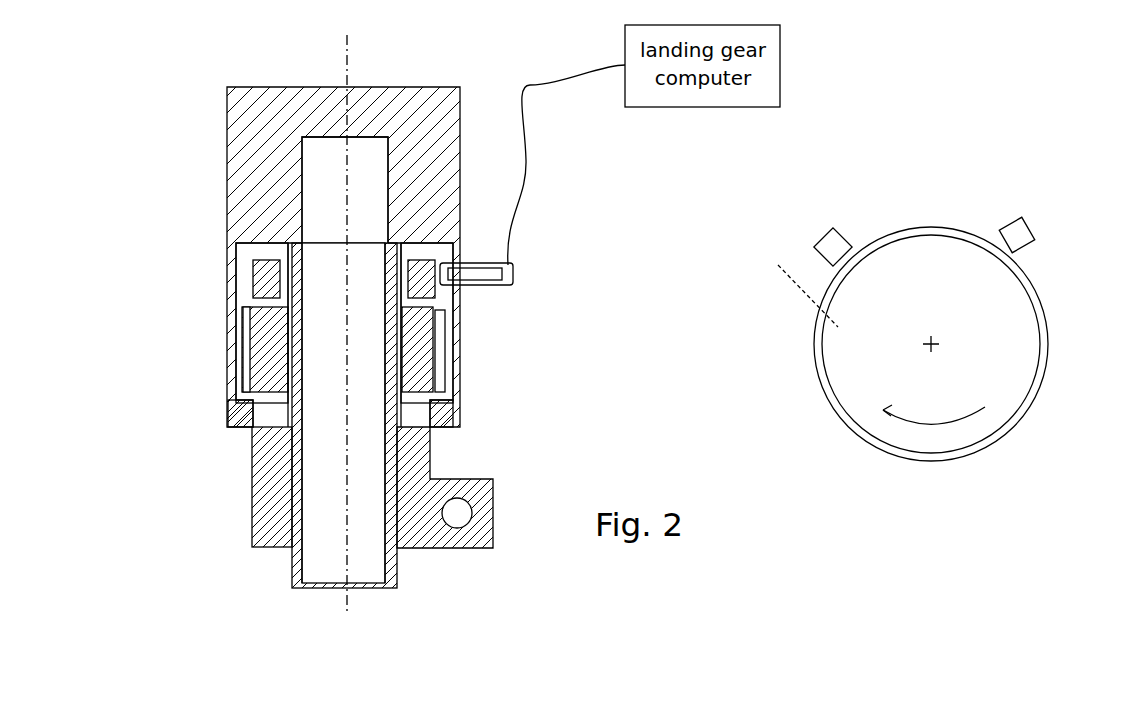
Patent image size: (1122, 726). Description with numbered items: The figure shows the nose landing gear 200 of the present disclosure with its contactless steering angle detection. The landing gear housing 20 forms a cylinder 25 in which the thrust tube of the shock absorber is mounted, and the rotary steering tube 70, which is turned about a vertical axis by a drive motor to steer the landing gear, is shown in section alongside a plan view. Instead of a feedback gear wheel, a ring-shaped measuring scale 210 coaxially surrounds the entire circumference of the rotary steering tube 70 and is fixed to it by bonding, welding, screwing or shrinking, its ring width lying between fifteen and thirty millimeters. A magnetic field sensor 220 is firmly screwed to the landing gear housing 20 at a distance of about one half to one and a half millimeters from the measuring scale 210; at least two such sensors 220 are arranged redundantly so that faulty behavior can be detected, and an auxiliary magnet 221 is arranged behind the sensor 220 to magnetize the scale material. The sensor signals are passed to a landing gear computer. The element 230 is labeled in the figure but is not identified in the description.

The landing gear housing 20 is at (232, 137).
The cylinder 25 is at (325, 463).
The rotary steering tube 70 is at (435, 550).
The nose landing gear 200 is at (182, 269).
The measuring scale 210 is at (460, 313).
The magnetic field sensor 220 is at (513, 273).
The auxiliary magnet 221 is at (472, 265).
The axle bore 230 is at (400, 100).